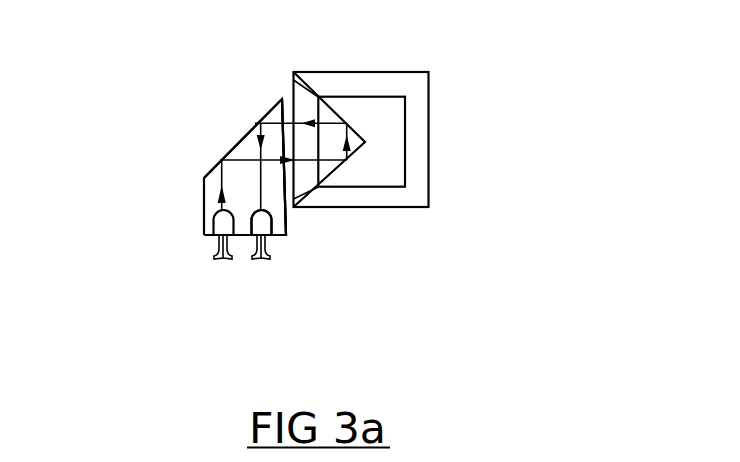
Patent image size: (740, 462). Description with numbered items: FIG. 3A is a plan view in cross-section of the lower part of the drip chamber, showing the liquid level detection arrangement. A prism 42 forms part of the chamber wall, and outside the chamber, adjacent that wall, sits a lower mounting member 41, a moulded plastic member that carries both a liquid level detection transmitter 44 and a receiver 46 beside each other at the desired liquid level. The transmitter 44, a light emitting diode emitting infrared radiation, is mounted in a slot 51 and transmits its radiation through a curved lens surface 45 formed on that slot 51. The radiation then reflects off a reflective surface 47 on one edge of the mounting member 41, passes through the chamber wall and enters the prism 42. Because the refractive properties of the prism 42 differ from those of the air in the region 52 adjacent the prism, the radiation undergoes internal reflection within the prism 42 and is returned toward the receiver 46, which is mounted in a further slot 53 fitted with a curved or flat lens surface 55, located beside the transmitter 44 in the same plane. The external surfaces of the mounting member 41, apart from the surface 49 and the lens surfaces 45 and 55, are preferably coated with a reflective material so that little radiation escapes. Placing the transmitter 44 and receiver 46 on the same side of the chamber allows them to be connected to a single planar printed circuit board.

The lower mounting member 41 is at (230, 170).
The prism 42 is at (330, 166).
The liquid level detection transmitter 44 is at (209, 236).
The curved lens surface 45 is at (219, 212).
The receiver 46 is at (253, 236).
The reflective surface 47 is at (251, 128).
The surface 49 is at (285, 137).
The slot 51 is at (213, 222).
The region 52 is at (392, 143).
The further slot 53 is at (280, 236).
The lens surface 55 is at (271, 214).